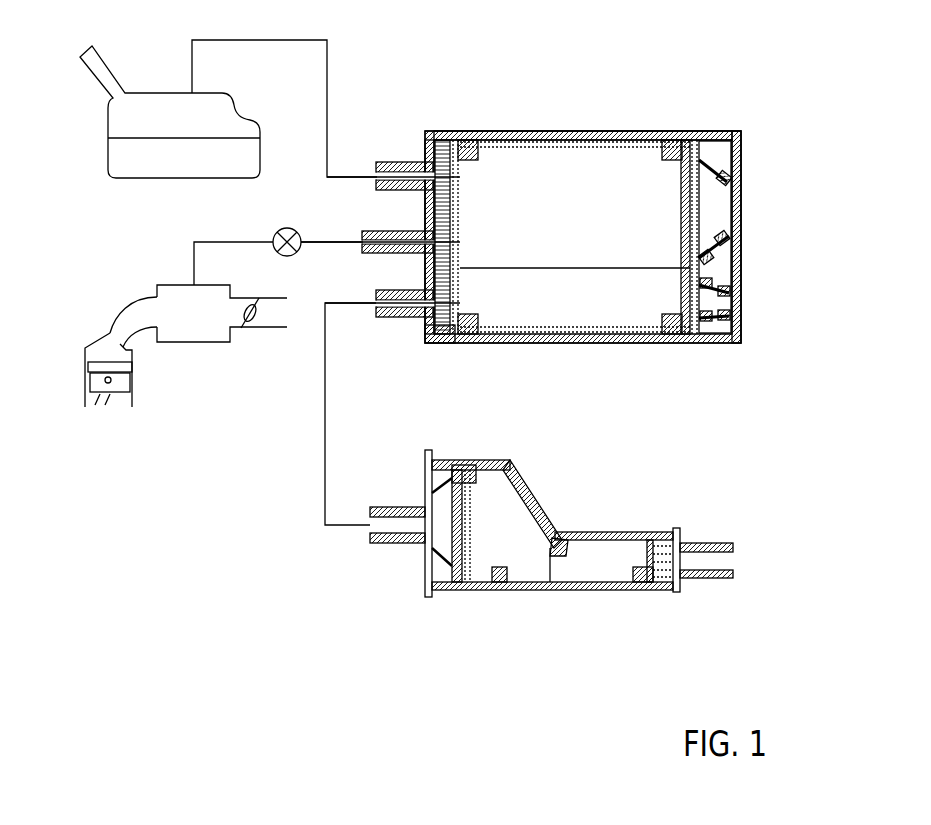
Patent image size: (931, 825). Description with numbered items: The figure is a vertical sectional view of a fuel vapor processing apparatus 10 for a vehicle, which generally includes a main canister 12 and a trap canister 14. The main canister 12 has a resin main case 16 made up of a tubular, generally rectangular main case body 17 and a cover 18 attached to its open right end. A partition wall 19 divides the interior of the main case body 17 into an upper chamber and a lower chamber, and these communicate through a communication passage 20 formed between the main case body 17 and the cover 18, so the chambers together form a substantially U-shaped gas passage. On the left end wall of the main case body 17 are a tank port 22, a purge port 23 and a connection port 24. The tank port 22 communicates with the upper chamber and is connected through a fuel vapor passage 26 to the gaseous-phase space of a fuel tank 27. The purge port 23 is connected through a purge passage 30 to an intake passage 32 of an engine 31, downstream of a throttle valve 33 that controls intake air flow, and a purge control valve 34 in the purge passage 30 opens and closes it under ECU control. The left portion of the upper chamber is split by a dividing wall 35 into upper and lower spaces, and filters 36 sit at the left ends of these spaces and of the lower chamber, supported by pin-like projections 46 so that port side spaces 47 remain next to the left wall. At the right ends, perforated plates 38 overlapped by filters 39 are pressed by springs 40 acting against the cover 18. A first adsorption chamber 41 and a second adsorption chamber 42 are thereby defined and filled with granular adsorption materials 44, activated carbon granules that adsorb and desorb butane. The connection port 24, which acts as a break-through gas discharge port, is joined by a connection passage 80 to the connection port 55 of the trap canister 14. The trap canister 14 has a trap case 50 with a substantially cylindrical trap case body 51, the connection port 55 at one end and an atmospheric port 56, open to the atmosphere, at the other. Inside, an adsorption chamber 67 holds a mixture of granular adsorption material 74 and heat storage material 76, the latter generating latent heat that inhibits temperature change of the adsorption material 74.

The fuel vapor processing apparatus 10 is at (730, 95).
The main canister 12 is at (660, 105).
The trap canister 14 is at (628, 490).
The main case 16 is at (605, 132).
The main case body 17 is at (527, 131).
The cover 18 is at (742, 213).
The partition wall 19 is at (578, 268).
The communication passage 20 is at (700, 260).
The tank port 22 is at (392, 162).
The purge port 23 is at (392, 231).
The connection port 24 is at (392, 317).
The fuel vapor passage 26 is at (327, 60).
The fuel tank 27 is at (158, 93).
The purge passage 30 is at (192, 262).
The engine 31 is at (90, 345).
The intake passage 32 is at (195, 342).
The throttle valve 33 is at (253, 325).
The purge control valve 34 is at (287, 228).
The dividing wall 35 is at (437, 215).
The filters 36 is at (457, 132).
The perforated plates 38 is at (686, 343).
The filters 39 is at (681, 250).
The springs 40 is at (742, 155).
The first adsorption chamber 41 is at (567, 148).
The second adsorption chamber 42 is at (577, 300).
The granular adsorption materials 44 is at (478, 155).
The pin-like projections 46 is at (442, 131).
The port side spaces 47 is at (433, 343).
The trap case 50 is at (530, 485).
The trap case body 51 is at (572, 590).
The connection port 55 is at (384, 543).
The atmospheric port 56 is at (706, 578).
The adsorption chamber 67 is at (522, 590).
The granular adsorption material 74 is at (462, 462).
The heat storage material 76 is at (478, 466).
The connection passage 80 is at (325, 460).